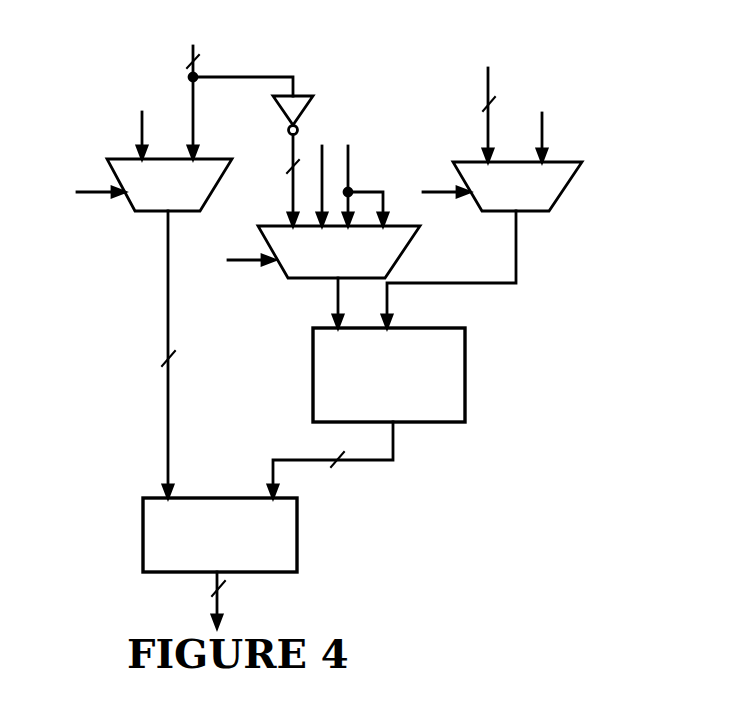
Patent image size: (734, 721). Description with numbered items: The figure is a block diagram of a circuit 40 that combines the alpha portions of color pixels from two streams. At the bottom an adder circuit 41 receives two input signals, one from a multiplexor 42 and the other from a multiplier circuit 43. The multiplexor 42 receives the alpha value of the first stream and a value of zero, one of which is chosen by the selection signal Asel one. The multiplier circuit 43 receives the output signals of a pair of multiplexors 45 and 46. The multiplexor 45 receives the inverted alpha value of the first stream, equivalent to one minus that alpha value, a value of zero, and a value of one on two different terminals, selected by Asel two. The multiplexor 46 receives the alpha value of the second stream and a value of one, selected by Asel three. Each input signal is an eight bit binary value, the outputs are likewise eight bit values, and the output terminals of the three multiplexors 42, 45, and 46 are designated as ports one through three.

The circuit 40 is at (246, 398).
The adder circuit 41 is at (220, 535).
The multiplexor 42 is at (133, 199).
The multiplier circuit 43 is at (389, 375).
The multiplexor 45 is at (288, 270).
The multiplexor 46 is at (528, 211).